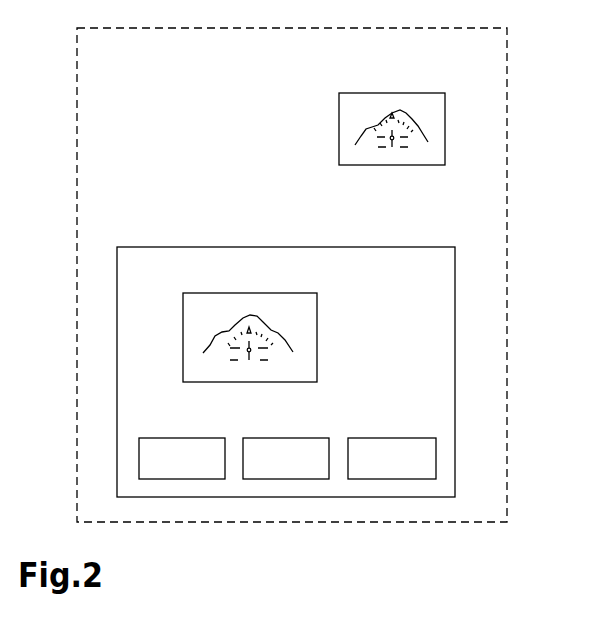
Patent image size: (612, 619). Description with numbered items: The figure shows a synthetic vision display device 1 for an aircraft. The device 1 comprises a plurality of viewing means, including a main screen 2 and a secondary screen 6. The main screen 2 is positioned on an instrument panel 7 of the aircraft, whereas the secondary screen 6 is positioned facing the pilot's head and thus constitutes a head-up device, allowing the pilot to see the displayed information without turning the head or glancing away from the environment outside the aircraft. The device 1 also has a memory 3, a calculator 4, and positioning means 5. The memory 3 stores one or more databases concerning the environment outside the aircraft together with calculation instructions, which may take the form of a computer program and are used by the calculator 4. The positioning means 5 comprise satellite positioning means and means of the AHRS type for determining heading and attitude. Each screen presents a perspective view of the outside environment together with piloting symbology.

The synthetic vision display device 1 is at (508, 78).
The main screen 2 is at (317, 321).
The memory 3 is at (173, 479).
The calculator 4 is at (275, 479).
The positioning means 5 is at (380, 479).
The secondary screen 6 is at (339, 108).
The instrument panel 7 is at (157, 247).